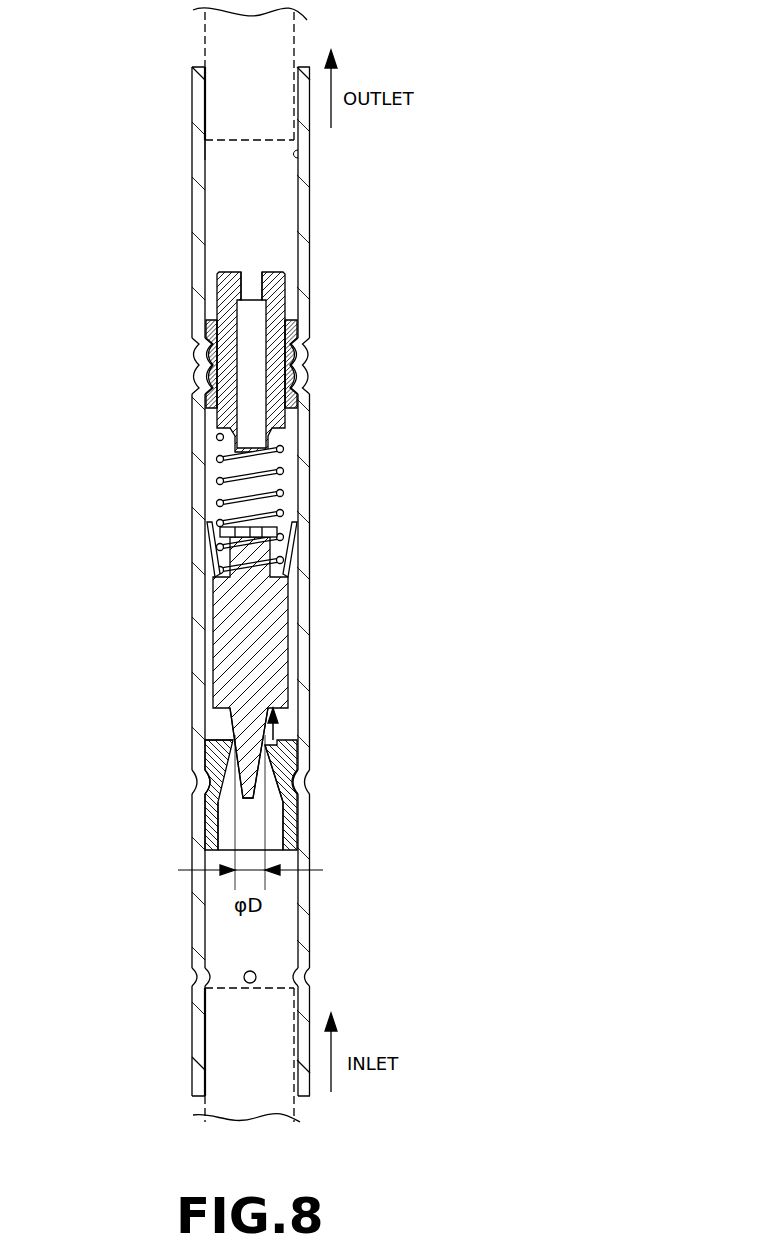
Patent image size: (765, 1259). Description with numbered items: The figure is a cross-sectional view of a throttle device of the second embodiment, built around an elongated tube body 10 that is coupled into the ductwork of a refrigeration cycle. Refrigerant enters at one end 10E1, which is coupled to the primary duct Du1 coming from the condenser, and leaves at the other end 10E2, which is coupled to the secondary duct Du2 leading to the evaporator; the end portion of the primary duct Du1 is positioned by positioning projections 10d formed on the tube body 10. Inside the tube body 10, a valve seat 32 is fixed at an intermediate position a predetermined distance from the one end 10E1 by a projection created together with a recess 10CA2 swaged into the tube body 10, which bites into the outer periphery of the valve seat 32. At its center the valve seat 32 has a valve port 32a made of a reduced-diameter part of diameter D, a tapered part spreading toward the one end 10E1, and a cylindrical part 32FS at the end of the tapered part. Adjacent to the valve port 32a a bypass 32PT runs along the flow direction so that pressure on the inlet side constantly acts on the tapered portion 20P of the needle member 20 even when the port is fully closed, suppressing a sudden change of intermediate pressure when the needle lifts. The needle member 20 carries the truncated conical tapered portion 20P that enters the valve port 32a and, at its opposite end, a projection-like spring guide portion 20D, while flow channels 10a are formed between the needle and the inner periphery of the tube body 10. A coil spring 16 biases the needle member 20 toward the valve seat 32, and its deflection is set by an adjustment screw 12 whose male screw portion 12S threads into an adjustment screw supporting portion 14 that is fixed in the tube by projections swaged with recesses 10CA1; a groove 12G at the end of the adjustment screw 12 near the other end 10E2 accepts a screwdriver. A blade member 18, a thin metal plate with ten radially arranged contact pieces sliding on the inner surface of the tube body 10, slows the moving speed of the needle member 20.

The tube body 10 is at (309, 220).
The other end of tube body 10E2 is at (199, 101).
The one end of tube body 10E1 is at (197, 1044).
The flow channel 10a is at (303, 157).
The secondary duct Du2 is at (307, 20).
The primary duct Du1 is at (203, 1107).
The recess 10CA1 is at (307, 378).
The recess 10CA2 is at (307, 783).
The positioning projection 10d is at (247, 972).
The adjustment screw 12 is at (218, 283).
The groove 12G is at (246, 270).
The male screw portion 12S is at (208, 329).
The adjustment screw supporting portion 14 is at (301, 338).
The coil spring 16 is at (297, 473).
The blade member 18 is at (294, 526).
The needle member 20 is at (280, 592).
The spring guide portion 20D is at (252, 554).
The tapered portion 20P is at (231, 712).
The valve seat 32 is at (299, 770).
The valve port 32a is at (228, 758).
The cylindrical part 32FS is at (217, 836).
The bypass 32PT is at (300, 752).